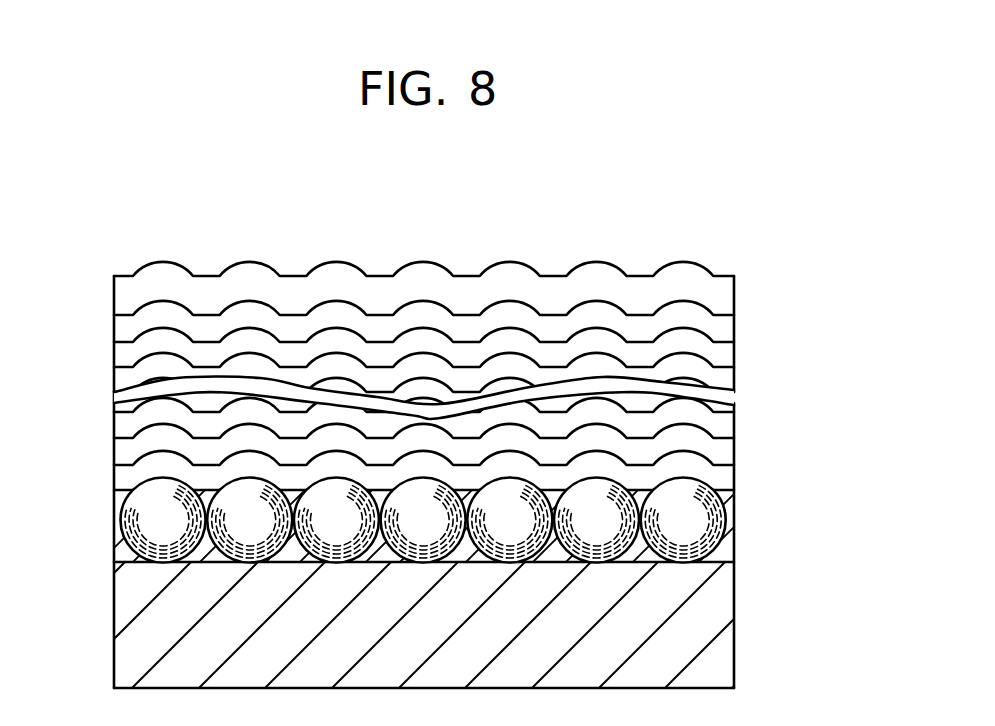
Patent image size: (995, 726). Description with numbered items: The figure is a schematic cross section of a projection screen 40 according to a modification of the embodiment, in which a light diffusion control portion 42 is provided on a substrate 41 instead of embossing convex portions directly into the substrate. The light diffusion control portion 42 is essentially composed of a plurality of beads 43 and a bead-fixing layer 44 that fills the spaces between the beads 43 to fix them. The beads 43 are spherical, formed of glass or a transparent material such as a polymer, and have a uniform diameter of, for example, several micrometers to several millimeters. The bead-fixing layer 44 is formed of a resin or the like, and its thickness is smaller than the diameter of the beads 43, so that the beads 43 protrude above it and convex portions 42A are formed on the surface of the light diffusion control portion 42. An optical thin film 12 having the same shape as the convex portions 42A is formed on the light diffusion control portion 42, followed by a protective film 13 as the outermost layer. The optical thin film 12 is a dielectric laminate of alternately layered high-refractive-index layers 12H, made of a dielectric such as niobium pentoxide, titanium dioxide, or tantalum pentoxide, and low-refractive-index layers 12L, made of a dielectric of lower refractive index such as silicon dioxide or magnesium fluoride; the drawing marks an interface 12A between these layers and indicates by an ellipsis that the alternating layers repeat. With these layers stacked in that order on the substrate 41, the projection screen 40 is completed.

The projection screen 40 is at (658, 245).
The protective film 13 is at (455, 284).
The optical thin film 12 is at (817, 318).
The high-refractive-index layer 12H is at (463, 397).
The low-refractive-index layer 12L is at (461, 397).
The interface of multilayer film 12A is at (151, 456).
The light diffusion control portion 42 is at (817, 500).
The beads 43 is at (720, 515).
The bead-fixing layer 44 is at (722, 549).
The convex portions 42A is at (150, 481).
The substrate 41 is at (429, 625).